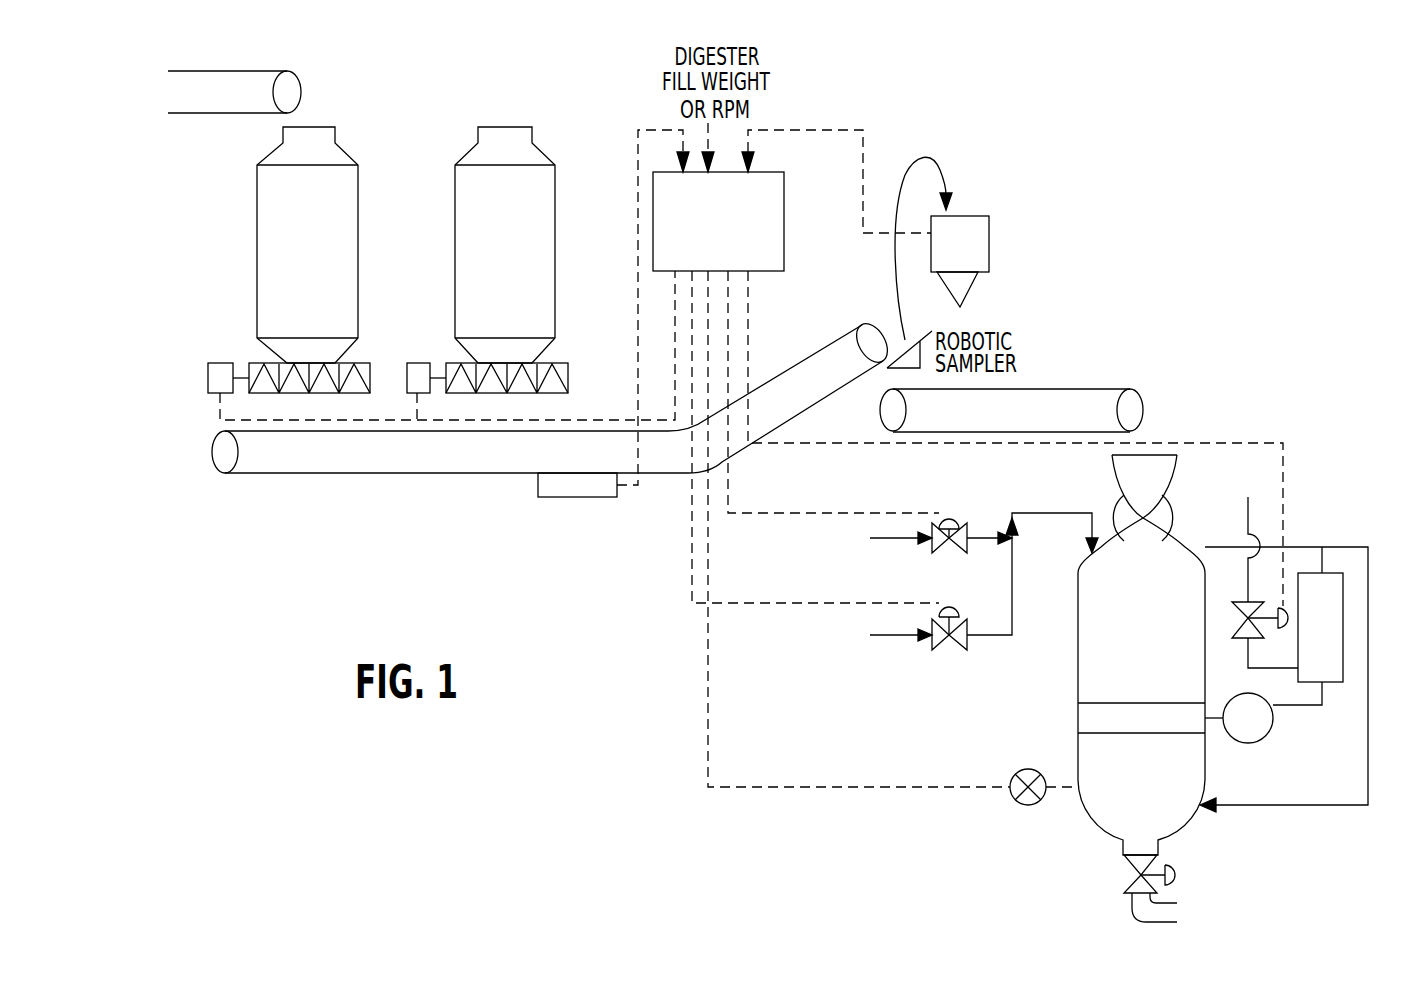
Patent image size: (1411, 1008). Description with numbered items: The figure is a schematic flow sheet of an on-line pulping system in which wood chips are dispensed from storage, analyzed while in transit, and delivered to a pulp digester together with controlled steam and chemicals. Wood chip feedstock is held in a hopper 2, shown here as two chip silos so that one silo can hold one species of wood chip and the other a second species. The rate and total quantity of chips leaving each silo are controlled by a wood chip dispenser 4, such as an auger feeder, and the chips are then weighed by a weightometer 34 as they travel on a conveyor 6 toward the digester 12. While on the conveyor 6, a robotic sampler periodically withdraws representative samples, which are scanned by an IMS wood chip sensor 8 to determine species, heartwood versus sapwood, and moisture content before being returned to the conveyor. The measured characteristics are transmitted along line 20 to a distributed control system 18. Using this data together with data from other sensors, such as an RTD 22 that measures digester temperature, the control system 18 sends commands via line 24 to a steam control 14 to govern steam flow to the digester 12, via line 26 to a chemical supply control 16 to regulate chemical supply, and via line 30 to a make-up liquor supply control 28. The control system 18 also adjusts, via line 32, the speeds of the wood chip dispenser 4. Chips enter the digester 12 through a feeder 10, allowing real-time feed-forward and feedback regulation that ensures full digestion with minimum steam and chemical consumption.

The hopper 2 is at (493, 291).
The wood chip dispenser 4 is at (567, 368).
The conveyor 6 is at (507, 452).
The IMS wood chip sensor 8 is at (954, 227).
The chip feeder 10 is at (1128, 490).
The digester 12 is at (1127, 697).
The steam control 14 is at (1233, 602).
The chemical supply control 16 is at (953, 516).
The distributed control system 18 is at (757, 253).
The line 20 is at (810, 130).
The RTD 22 is at (1030, 768).
The line 24 is at (797, 445).
The line 26 is at (758, 515).
The make-up liquor supply control 28 is at (967, 623).
The line 30 is at (758, 605).
The line 32 is at (585, 420).
The weightometer 34 is at (538, 483).